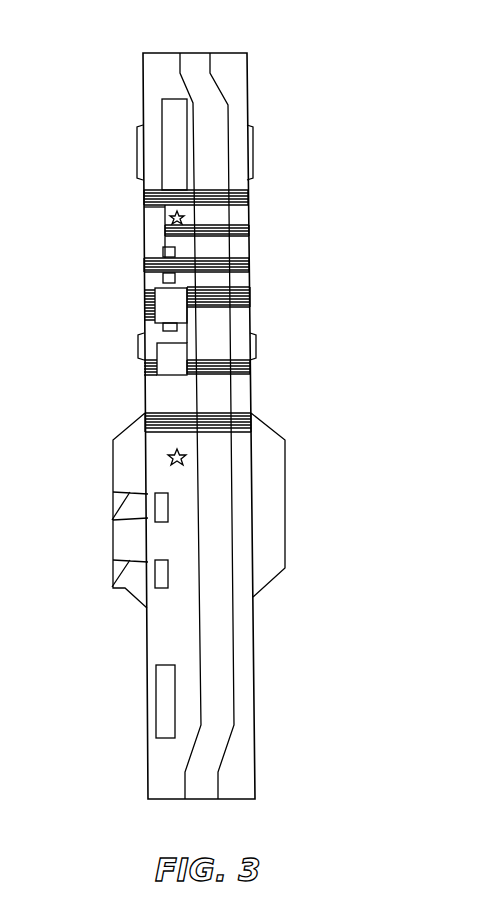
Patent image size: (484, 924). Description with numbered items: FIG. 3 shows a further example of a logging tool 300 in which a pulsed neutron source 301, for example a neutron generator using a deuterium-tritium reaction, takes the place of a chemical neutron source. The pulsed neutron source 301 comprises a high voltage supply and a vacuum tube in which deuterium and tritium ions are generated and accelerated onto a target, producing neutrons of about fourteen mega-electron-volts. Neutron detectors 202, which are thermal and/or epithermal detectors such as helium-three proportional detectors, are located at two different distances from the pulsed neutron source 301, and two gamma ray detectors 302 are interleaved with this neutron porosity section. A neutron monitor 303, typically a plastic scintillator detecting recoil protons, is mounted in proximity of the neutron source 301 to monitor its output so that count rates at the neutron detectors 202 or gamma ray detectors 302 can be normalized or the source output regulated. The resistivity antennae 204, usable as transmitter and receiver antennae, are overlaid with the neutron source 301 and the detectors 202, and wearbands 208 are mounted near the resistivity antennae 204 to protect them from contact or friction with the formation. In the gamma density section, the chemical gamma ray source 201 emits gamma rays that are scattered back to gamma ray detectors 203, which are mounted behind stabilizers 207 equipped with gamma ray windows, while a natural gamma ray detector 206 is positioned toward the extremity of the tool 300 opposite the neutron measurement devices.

The tool 300 is at (268, 48).
The chemical gamma ray source 201 is at (170, 454).
The neutron detectors 202 is at (163, 253).
The gamma ray detectors 203 is at (155, 510).
The resistivity antennae 204 is at (249, 197).
The natural gamma ray detector 206 is at (156, 700).
The stabilizers 207 is at (119, 456).
The wearbands 208 is at (137, 142).
The pulsed neutron source 301 is at (144, 205).
The gamma ray detectors 302 is at (144, 307).
The neutron monitor 303 is at (168, 223).